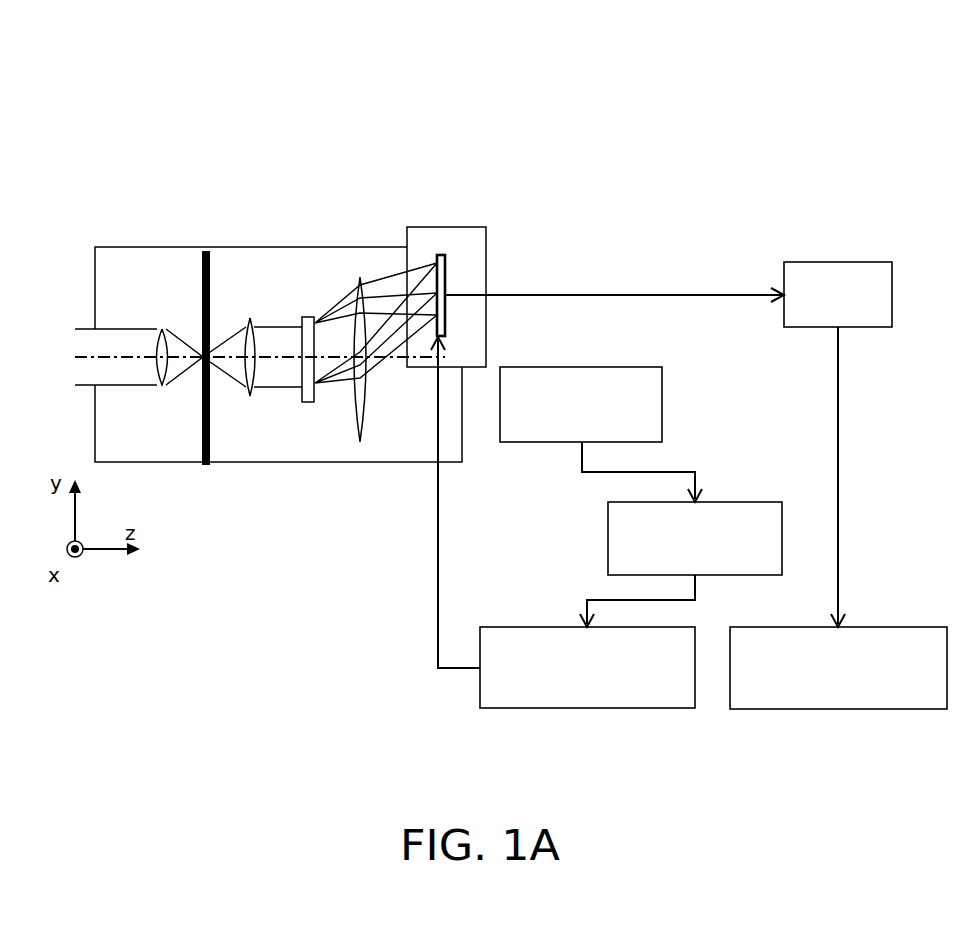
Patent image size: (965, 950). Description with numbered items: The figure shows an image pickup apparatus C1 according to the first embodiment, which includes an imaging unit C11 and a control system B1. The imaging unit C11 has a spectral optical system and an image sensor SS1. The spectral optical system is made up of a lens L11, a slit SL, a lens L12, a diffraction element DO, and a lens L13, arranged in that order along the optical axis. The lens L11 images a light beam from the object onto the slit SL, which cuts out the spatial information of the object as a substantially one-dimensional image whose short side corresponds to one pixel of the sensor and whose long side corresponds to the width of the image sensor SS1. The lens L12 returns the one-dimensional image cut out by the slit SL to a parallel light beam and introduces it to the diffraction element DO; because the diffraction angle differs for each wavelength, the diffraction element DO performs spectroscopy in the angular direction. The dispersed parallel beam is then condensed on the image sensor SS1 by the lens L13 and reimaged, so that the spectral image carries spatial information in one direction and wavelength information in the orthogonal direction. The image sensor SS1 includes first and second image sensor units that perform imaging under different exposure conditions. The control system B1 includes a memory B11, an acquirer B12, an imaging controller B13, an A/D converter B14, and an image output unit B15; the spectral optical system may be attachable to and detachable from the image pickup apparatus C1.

The image pickup apparatus C1 is at (867, 78).
The imaging unit C11 is at (499, 128).
The control system B1 is at (867, 128).
The lens L11 is at (162, 328).
The slit SL is at (203, 303).
The lens L12 is at (250, 318).
The diffraction element DO is at (305, 317).
The lens L13 is at (360, 278).
The image sensor SS1 is at (440, 255).
The memory B11 is at (642, 367).
The acquirer B12 is at (614, 535).
The imaging controller B13 is at (538, 708).
The A/D converter B14 is at (803, 262).
The image output unit B15 is at (891, 627).